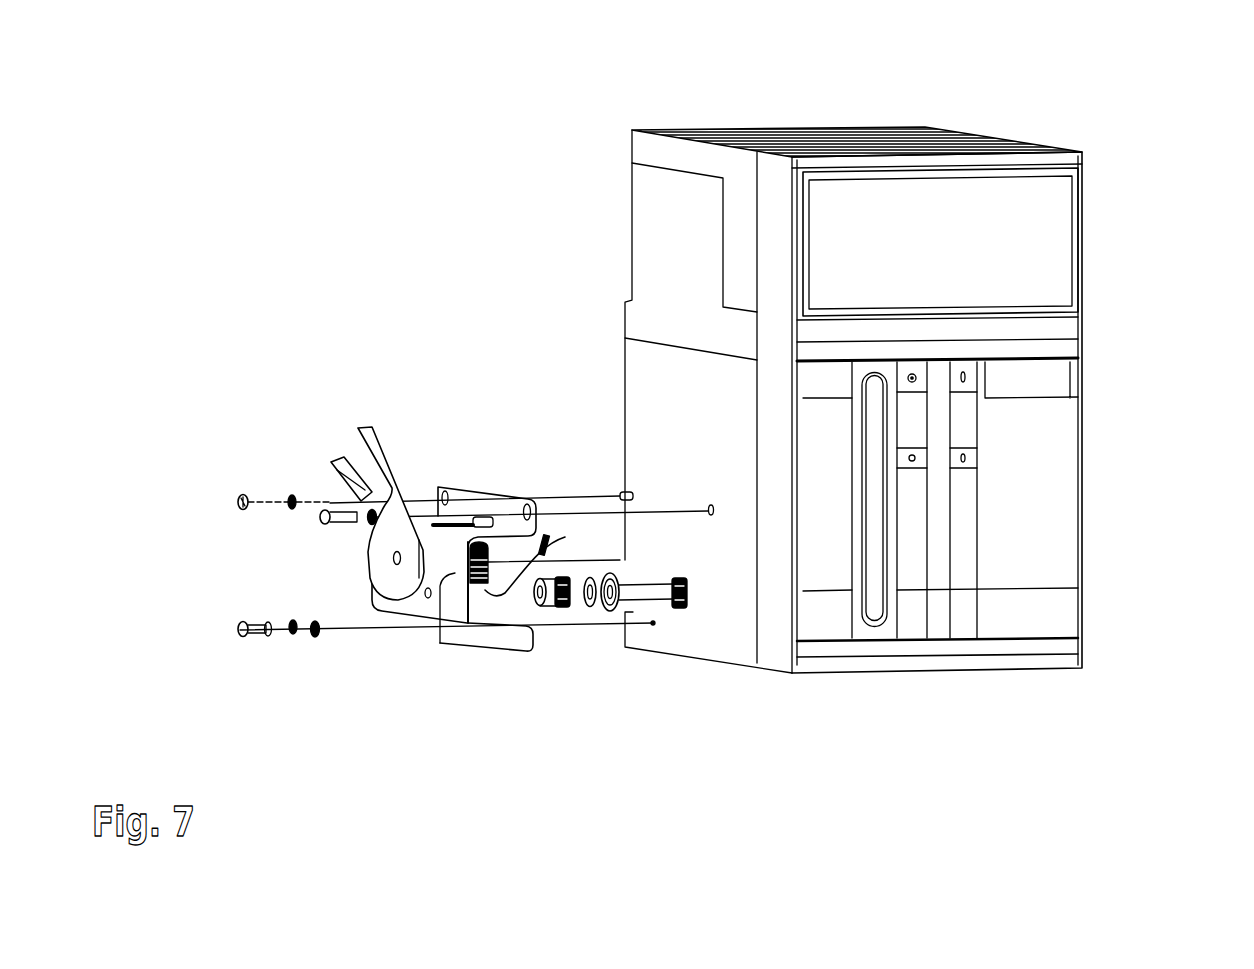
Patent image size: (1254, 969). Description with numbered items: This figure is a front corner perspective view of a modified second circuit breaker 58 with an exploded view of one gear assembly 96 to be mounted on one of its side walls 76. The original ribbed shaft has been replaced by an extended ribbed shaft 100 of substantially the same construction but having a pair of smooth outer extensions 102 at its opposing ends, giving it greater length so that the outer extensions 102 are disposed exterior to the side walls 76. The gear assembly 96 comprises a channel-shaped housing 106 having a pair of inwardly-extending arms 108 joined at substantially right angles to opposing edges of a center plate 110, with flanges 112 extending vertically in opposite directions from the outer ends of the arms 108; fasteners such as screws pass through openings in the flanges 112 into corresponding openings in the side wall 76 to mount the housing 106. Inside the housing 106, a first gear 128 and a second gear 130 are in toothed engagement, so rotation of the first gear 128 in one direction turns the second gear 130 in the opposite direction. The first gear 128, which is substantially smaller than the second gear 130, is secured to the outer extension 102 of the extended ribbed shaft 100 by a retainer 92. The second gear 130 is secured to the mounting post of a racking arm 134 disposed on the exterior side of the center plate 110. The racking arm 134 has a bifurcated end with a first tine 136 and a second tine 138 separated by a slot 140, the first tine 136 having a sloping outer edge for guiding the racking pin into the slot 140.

The second circuit breaker 58 is at (1094, 141).
The side walls 76 is at (655, 385).
The gear assembly 96 is at (692, 468).
The retainer 92 is at (593, 610).
The extended ribbed shaft 100 is at (691, 610).
The outer extension 102 is at (654, 595).
The channel-shaped housing 106 is at (410, 623).
The inwardly-extending arms 108 is at (490, 537).
The center plate 110 is at (443, 618).
The flanges 112 is at (493, 503).
The first gear 128 is at (550, 613).
The second gear 130 is at (543, 557).
The racking arm 134 is at (370, 527).
The first tine 136 is at (363, 455).
The second tine 138 is at (338, 475).
The slot 140 is at (360, 470).